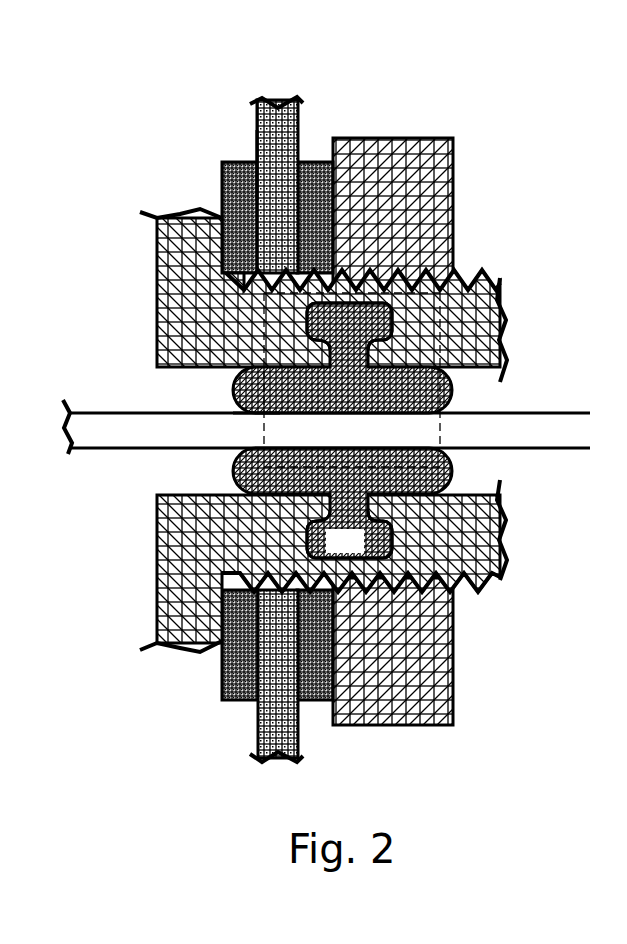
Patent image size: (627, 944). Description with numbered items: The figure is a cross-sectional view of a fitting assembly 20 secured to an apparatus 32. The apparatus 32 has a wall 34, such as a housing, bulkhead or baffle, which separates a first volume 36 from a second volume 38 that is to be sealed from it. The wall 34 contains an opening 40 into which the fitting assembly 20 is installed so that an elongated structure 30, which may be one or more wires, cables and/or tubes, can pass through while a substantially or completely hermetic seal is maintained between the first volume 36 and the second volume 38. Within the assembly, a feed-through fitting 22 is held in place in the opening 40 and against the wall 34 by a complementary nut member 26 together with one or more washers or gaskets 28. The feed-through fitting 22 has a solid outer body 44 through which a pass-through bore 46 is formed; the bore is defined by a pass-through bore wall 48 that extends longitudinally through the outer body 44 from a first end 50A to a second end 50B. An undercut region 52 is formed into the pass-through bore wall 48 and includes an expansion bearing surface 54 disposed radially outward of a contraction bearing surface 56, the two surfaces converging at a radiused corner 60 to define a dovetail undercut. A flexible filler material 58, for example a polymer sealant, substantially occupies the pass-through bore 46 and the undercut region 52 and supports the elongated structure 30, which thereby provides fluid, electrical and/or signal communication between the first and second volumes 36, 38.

The fitting assembly 20 is at (512, 306).
The feed-through fitting 22 is at (154, 277).
The nut member 26 is at (454, 130).
The washers or gaskets 28 is at (220, 160).
The elongated structure 30 is at (462, 436).
The apparatus 32 is at (275, 90).
The wall 34 is at (252, 130).
The first volume 36 is at (146, 185).
The second volume 38 is at (483, 192).
The opening 40 is at (273, 587).
The outer body 44 is at (157, 547).
The pass-through bore 46 is at (205, 468).
The pass-through bore wall 48 is at (183, 370).
The first end 50A is at (175, 398).
The second end 50B is at (490, 398).
The undercut region 52 is at (333, 551).
The expansion bearing surface 54 is at (395, 275).
The contraction bearing surface 56 is at (375, 349).
The flexible filler material 58 is at (262, 413).
The radiused corner 60 is at (310, 318).